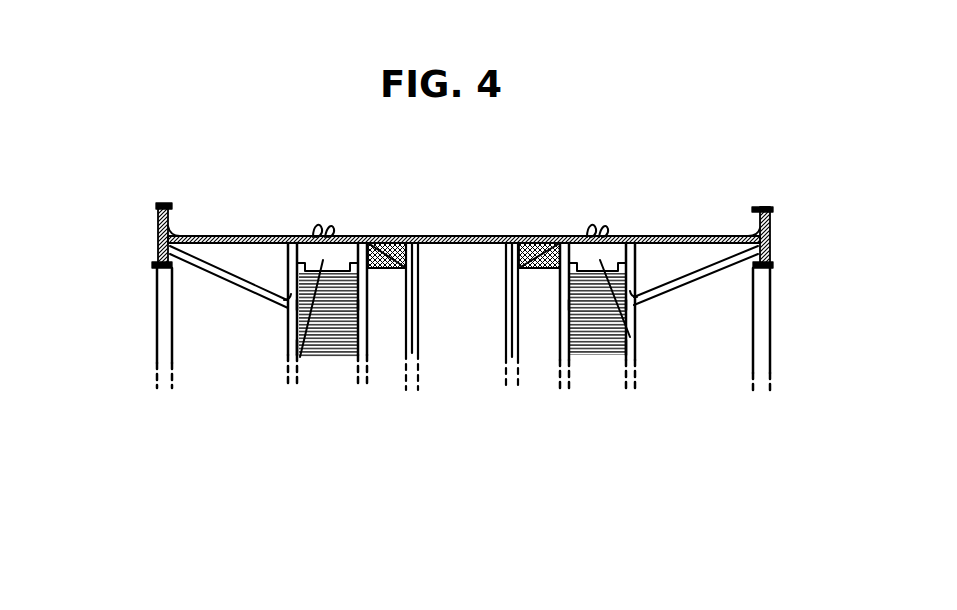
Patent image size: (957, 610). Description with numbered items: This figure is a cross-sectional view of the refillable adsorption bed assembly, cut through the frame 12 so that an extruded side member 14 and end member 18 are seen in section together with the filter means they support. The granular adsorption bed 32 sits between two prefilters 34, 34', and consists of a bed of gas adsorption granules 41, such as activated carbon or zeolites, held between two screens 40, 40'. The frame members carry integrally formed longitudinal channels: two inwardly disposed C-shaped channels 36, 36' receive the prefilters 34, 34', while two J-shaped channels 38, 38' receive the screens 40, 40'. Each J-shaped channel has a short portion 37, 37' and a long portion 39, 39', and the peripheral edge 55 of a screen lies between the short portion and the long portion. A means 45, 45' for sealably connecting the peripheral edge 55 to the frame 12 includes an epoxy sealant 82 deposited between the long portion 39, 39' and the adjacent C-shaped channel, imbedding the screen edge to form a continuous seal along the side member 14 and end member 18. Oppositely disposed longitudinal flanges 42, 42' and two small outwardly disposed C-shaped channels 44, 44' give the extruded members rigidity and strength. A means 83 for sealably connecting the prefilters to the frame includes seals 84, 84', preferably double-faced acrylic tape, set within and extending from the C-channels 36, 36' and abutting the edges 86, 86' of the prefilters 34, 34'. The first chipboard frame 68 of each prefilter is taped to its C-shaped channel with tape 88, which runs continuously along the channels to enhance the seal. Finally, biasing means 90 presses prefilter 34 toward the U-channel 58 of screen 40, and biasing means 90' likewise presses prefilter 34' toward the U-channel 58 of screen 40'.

The frame 12 is at (157, 283).
The side member 14 is at (723, 236).
The end member 18 is at (155, 321).
The granular adsorption bed 32 is at (481, 364).
The prefilter 34 is at (300, 367).
The prefilter 34' is at (600, 352).
The C-shaped channel 36 is at (304, 211).
The C-shaped channel 36' is at (615, 207).
The short portion 37 is at (371, 226).
The short portion 37' is at (541, 226).
The J-shaped channel 38 is at (439, 191).
The J-shaped channel 38' is at (469, 198).
The long portion 39 is at (445, 258).
The long portion 39' is at (473, 274).
The screen 40 is at (387, 360).
The screen 40' is at (517, 350).
The bed of gas adsorption granules 41 is at (458, 357).
The flange 42 is at (147, 205).
The flange 42' is at (790, 227).
The C-shaped channel 44 is at (316, 188).
The C-shaped channel 44' is at (584, 197).
The means for sealably connecting peripheral edge to frame 45 is at (353, 138).
The means for sealably connecting peripheral edge to frame 45' is at (571, 166).
The peripheral edge 55 is at (398, 240).
The U-channel 58 is at (390, 357).
The first chipboard frame 68 is at (290, 348).
The epoxy sealant 82 is at (548, 262).
The means for sealably connecting prefilters to frame 83 is at (273, 255).
The seal 84 is at (294, 331).
The seal 84' is at (637, 315).
The edge 86 is at (297, 346).
The edge 86' is at (631, 323).
The tape 88 is at (292, 262).
The biasing means 90 is at (229, 296).
The biasing means 90' is at (696, 297).